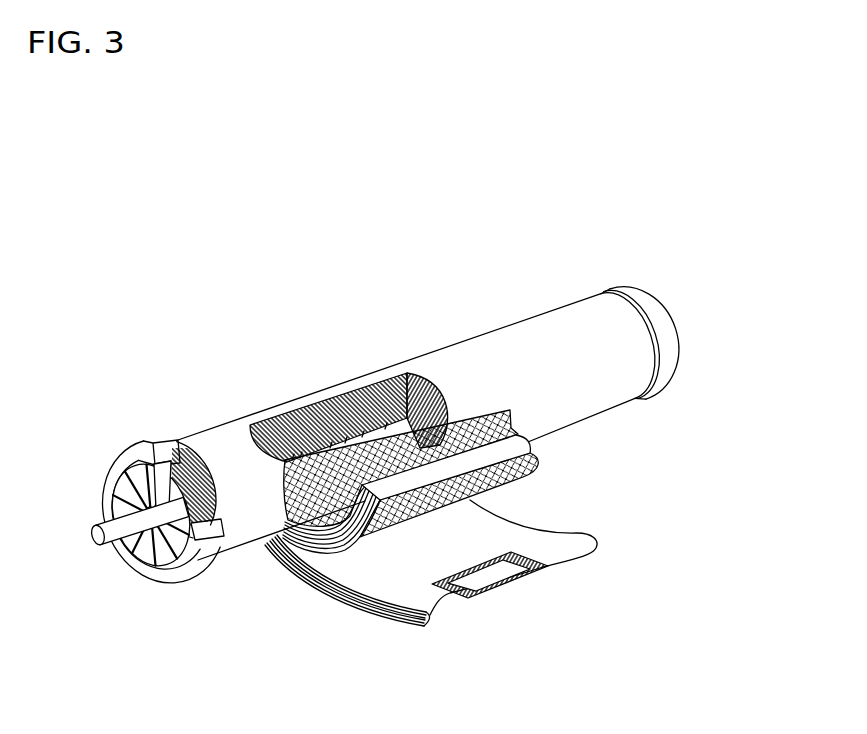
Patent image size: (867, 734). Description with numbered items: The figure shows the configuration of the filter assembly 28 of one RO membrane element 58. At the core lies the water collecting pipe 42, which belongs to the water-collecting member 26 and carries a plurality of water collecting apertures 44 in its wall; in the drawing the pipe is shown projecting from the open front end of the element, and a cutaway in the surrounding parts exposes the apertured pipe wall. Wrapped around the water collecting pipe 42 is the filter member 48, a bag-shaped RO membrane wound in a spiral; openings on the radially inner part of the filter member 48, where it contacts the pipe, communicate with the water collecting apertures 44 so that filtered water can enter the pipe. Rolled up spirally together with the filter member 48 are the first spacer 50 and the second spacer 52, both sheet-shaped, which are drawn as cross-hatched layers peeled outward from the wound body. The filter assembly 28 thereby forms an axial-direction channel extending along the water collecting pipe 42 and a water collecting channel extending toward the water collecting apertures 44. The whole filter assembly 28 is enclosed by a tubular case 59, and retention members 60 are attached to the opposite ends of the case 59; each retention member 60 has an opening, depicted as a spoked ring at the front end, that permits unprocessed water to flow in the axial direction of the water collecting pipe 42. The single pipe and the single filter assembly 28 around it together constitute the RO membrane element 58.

The water-collecting member 26 is at (292, 412).
The filter assembly 28 is at (311, 619).
The water collecting pipe 42 is at (333, 396).
The water collecting apertures 44 is at (373, 384).
The filter member 48 is at (577, 533).
The first spacer 50 is at (541, 461).
The second spacer 52 is at (490, 589).
The RO membrane element 58 is at (668, 242).
The case 59 is at (527, 318).
The retention members 60 is at (620, 284).